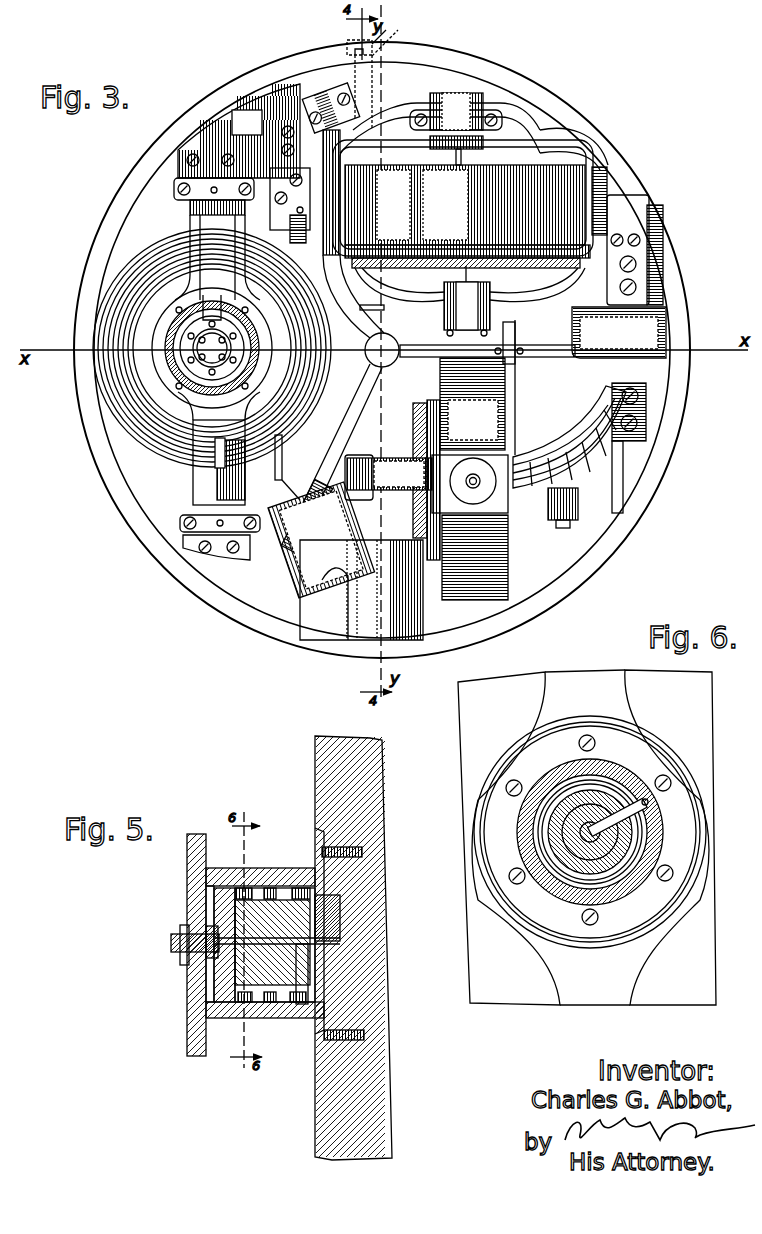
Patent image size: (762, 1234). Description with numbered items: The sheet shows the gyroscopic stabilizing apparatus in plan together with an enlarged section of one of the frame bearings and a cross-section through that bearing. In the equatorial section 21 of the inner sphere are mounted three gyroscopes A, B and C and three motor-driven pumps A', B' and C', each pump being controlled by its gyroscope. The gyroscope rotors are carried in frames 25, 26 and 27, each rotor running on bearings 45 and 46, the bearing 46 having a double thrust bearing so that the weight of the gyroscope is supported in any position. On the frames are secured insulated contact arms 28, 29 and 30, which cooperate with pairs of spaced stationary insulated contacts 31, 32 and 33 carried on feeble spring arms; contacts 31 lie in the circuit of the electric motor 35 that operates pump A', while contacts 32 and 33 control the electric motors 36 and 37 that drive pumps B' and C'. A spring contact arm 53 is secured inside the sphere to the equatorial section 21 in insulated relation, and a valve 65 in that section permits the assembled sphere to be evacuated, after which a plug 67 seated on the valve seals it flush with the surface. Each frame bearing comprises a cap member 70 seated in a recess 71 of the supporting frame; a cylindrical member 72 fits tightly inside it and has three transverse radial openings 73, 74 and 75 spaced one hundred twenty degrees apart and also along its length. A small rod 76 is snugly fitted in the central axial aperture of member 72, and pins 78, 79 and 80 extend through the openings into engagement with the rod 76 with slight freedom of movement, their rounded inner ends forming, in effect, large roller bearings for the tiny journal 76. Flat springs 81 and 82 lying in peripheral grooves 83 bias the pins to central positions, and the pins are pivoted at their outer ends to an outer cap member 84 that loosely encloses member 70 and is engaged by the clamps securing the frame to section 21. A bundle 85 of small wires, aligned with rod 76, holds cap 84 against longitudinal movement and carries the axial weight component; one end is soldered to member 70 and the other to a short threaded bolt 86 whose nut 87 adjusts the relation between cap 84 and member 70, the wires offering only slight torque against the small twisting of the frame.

In FIG. 3, the equatorial section 21 is at (666, 253).
In FIG. 3, the frame 25 is at (236, 236).
In FIG. 3, the frame 26 is at (390, 145).
In FIG. 3, the frame 27 is at (388, 460).
In FIG. 3, the contact arm 28 is at (265, 455).
In FIG. 3, the contact arm 29 is at (376, 303).
In FIG. 3, the contact arm 30 is at (516, 382).
In FIG. 3, the stationary contacts 31 is at (284, 452).
In FIG. 3, the stationary contacts 32 is at (384, 316).
In FIG. 3, the stationary contacts 33 is at (516, 328).
In FIG. 3, the electric motor 35 is at (365, 548).
In FIG. 3, the electric motor 36 is at (270, 512).
In FIG. 3, the electric motor 37 is at (660, 320).
In FIG. 3, the bearing 45 is at (482, 278).
In FIG. 3, the bearing 46 is at (454, 96).
In FIG. 3, the spring contact arm 53 is at (330, 98).
In FIG. 3, the valve 65 is at (393, 38).
In FIG. 3, the plug 67 is at (350, 42).
In FIG. 5, the cap member 70 is at (335, 880).
In FIG. 6, the cap member 70 is at (516, 906).
In FIG. 5, the recess 71 is at (330, 845).
In FIG. 5, the cylindrical member 72 is at (335, 918).
In FIG. 6, the cylindrical member 72 is at (552, 878).
In FIG. 6, the radial opening 73 is at (640, 812).
In FIG. 5, the radial opening 74 is at (284, 1004).
In FIG. 6, the radial opening 74 is at (600, 880).
In FIG. 6, the radial opening 75 is at (540, 772).
In FIG. 5, the rod 76 is at (340, 941).
In FIG. 6, the rod 76 is at (540, 840).
In FIG. 6, the pin 78 is at (649, 801).
In FIG. 5, the pin 79 is at (302, 1006).
In FIG. 6, the pin 79 is at (582, 890).
In FIG. 6, the pin 80 is at (528, 800).
In FIG. 6, the flat spring 81 is at (612, 778).
In FIG. 6, the flat spring 82 is at (625, 830).
In FIG. 5, the peripheral grooves 83 is at (300, 886).
In FIG. 6, the peripheral grooves 83 is at (594, 790).
In FIG. 3, the cap member 84 is at (195, 200).
In FIG. 5, the cap member 84 is at (214, 870).
In FIG. 6, the cap member 84 is at (628, 775).
In FIG. 5, the bundle of small wires 85 is at (210, 952).
In FIG. 5, the threaded bolt 86 is at (172, 946).
In FIG. 5, the nut 87 is at (180, 930).
In FIG. 3, the gyroscope A is at (212, 362).
In FIG. 3, the gyroscope B is at (463, 203).
In FIG. 3, the gyroscope C is at (472, 479).
In FIG. 3, the motor-driven pump A' is at (361, 611).
In FIG. 3, the motor-driven pump B' is at (312, 571).
In FIG. 3, the motor-driven pump C' is at (613, 413).